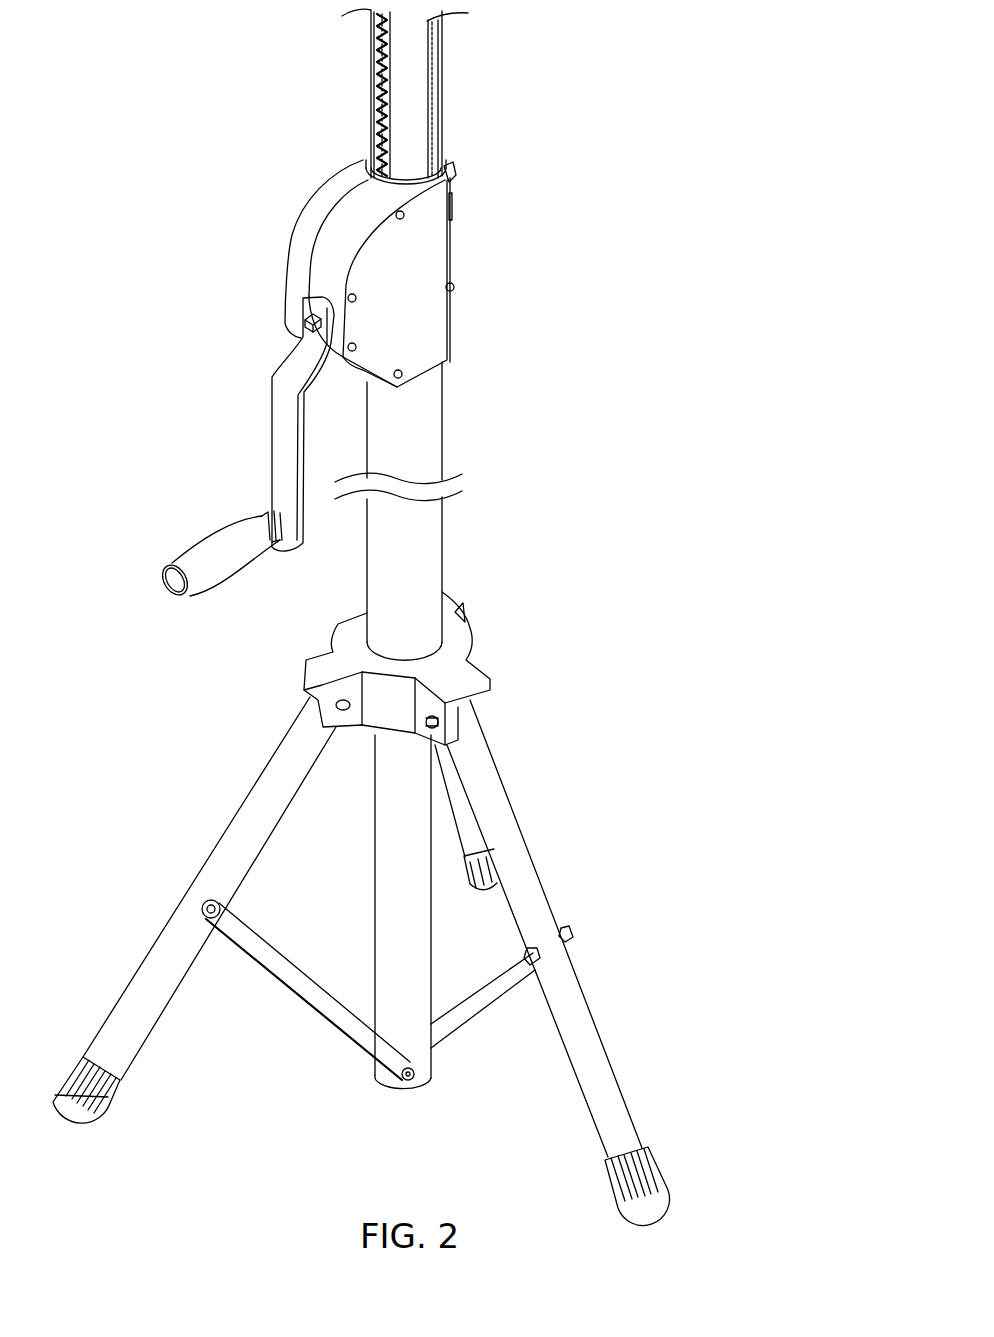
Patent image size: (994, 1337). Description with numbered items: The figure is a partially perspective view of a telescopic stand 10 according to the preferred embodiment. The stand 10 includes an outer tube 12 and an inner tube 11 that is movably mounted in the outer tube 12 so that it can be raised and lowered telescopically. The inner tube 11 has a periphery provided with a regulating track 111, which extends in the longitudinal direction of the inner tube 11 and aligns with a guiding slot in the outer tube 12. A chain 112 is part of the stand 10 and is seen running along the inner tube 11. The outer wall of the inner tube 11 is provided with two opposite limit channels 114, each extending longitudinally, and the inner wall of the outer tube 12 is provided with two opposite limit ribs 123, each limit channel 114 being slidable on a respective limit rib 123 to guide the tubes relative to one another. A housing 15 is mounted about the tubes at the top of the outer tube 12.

The telescopic stand 10 is at (523, 597).
The inner tube 11 is at (410, 119).
The regulating track 111 is at (372, 117).
The chain 112 is at (377, 60).
The limit channels 114 is at (428, 137).
The outer tube 12 is at (418, 435).
The limit ribs 123 is at (448, 178).
The housing 15 is at (313, 195).